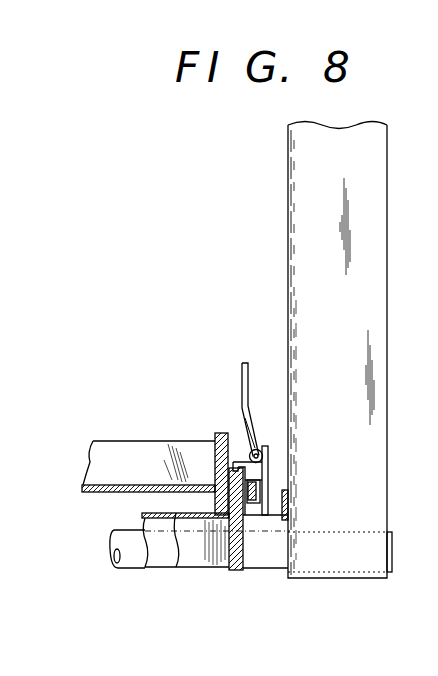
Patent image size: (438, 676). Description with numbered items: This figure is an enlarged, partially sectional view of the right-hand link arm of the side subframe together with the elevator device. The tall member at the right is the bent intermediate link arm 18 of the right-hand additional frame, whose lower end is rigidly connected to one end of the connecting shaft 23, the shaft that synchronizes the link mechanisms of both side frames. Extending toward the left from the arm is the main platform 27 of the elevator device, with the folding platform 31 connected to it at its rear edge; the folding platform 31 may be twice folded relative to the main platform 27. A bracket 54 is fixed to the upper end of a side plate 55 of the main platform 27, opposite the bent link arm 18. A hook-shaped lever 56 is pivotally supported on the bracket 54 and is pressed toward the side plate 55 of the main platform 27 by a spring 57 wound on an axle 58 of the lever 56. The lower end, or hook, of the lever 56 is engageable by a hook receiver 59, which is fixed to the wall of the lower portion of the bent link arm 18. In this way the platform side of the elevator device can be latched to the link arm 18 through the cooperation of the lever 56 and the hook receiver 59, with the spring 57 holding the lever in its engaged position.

The bent intermediate link arm 18 is at (387, 300).
The connecting shaft 23 is at (133, 563).
The main platform 27 is at (176, 567).
The folding platform 31 is at (132, 458).
The bracket 54 is at (216, 450).
The side plate 55 is at (231, 572).
The hook-shaped lever 56 is at (248, 371).
The spring 57 is at (248, 442).
The axle 58 is at (263, 452).
The hook receiver 59 is at (265, 517).